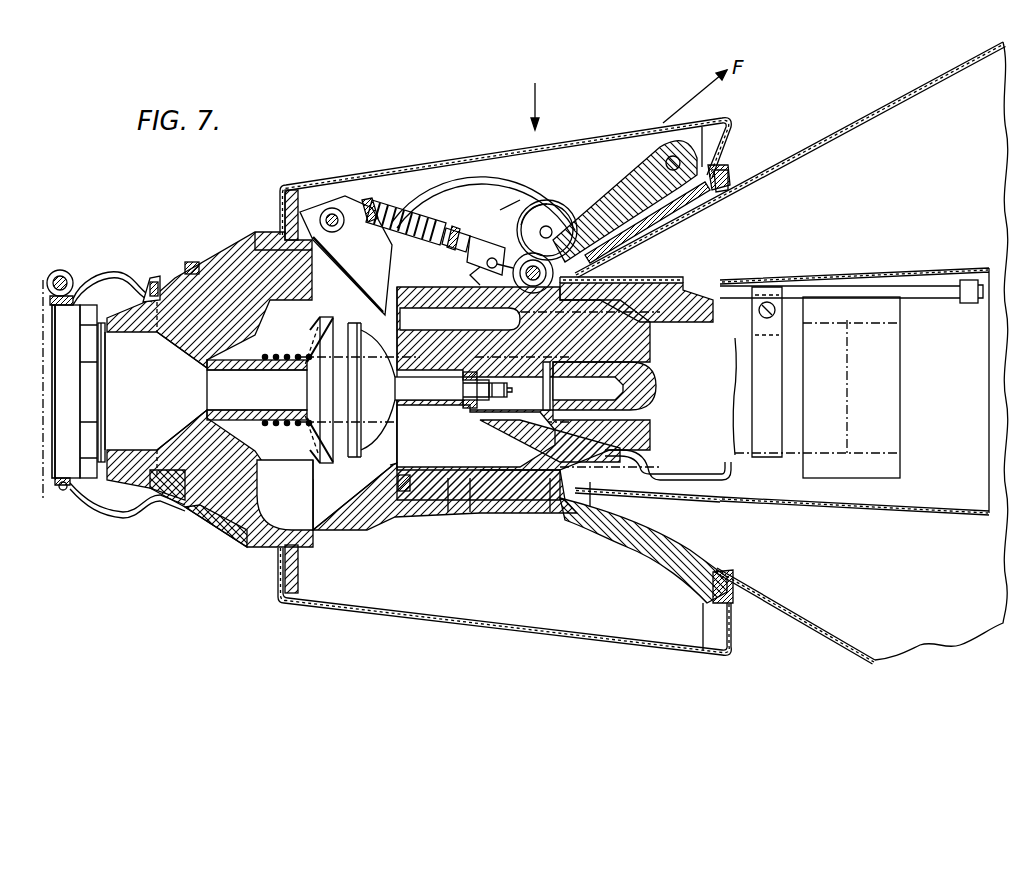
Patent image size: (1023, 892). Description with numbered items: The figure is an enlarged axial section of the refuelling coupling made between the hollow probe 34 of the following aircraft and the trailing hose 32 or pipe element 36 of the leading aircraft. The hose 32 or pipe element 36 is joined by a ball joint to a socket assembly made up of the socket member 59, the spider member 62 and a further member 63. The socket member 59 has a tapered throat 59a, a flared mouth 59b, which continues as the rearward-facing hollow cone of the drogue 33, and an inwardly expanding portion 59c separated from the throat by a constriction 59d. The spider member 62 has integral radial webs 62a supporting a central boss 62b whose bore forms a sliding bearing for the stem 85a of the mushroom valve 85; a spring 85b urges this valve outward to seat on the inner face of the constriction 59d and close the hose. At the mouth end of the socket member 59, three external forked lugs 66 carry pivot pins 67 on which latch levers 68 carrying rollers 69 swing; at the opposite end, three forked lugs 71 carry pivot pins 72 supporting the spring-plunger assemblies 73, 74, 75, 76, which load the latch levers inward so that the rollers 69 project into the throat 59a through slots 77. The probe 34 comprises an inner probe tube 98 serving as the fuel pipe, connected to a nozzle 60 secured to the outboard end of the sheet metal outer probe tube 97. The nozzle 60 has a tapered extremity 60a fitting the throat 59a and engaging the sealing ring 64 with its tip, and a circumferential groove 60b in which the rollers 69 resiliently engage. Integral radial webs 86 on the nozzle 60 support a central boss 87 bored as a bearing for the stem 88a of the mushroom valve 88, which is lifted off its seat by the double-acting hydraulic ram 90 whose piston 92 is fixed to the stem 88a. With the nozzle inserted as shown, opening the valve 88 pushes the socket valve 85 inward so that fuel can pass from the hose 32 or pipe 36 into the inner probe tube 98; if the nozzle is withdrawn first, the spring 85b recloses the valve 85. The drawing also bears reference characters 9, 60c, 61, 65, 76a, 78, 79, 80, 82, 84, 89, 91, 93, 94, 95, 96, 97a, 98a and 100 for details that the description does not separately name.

The direction arrow 9 is at (530, 106).
The trailing hose 32 is at (43, 450).
The drogue 33 is at (827, 146).
The hollow probe 34 is at (800, 509).
The pipe element 36 is at (30, 450).
The socket member 59 is at (503, 528).
The tapered throat 59a is at (503, 495).
The flared mouth 59b is at (667, 545).
The inwardly expanding portion 59c is at (340, 532).
The constriction 59d is at (393, 468).
The nozzle 60 is at (452, 492).
The tapered extremity 60a is at (473, 492).
The circumferential groove 60b is at (592, 502).
The port 60c is at (553, 498).
The housing member 61 is at (177, 470).
The spider member 62 is at (262, 532).
The radial webs 62a is at (290, 282).
The central boss 62b is at (240, 418).
The socket assembly member 63 is at (228, 532).
The sealing ring 64 is at (407, 480).
The fastening screws 65 is at (192, 268).
The external forked lugs 66 is at (730, 168).
The pivot pins 67 is at (671, 157).
The latch levers 68 is at (593, 212).
The rollers 69 is at (512, 205).
The forked lugs 71 is at (317, 205).
The pivot pins 72 is at (325, 208).
The spring-plunger assembly 73 is at (363, 200).
The spring-plunger assembly 74 is at (390, 205).
The spring-plunger assembly 75 is at (413, 205).
The spring-plunger assembly 76 is at (477, 230).
The adjusting nut 76a is at (447, 220).
The slots 77 is at (617, 265).
The casing cover 78 is at (590, 141).
The cam follower 79 is at (536, 213).
The cam wheel 80 is at (530, 228).
The cam pin 82 is at (547, 226).
The guard arc 84 is at (456, 185).
The mushroom valve 85 is at (331, 432).
The stem 85a is at (223, 393).
The spring 85b is at (287, 426).
The radial webs 86 is at (552, 325).
The central boss 87 is at (448, 410).
The mushroom valve 88 is at (343, 352).
The stem 88a is at (407, 385).
The stem nut 89 is at (462, 410).
The hydraulic ram 90 is at (507, 353).
The bearing sleeve 91 is at (630, 376).
The piston 92 is at (512, 383).
The valve seat block 93 is at (605, 332).
The inclined passage 94 is at (586, 454).
The control rod 95 is at (815, 288).
The conduit 96 is at (733, 473).
The sheet metal outer probe tube 97 is at (895, 510).
The casing strip 97a is at (640, 507).
The inner probe tube 98 is at (938, 320).
The clamp block 98a is at (716, 305).
The flexible boot 100 is at (103, 507).